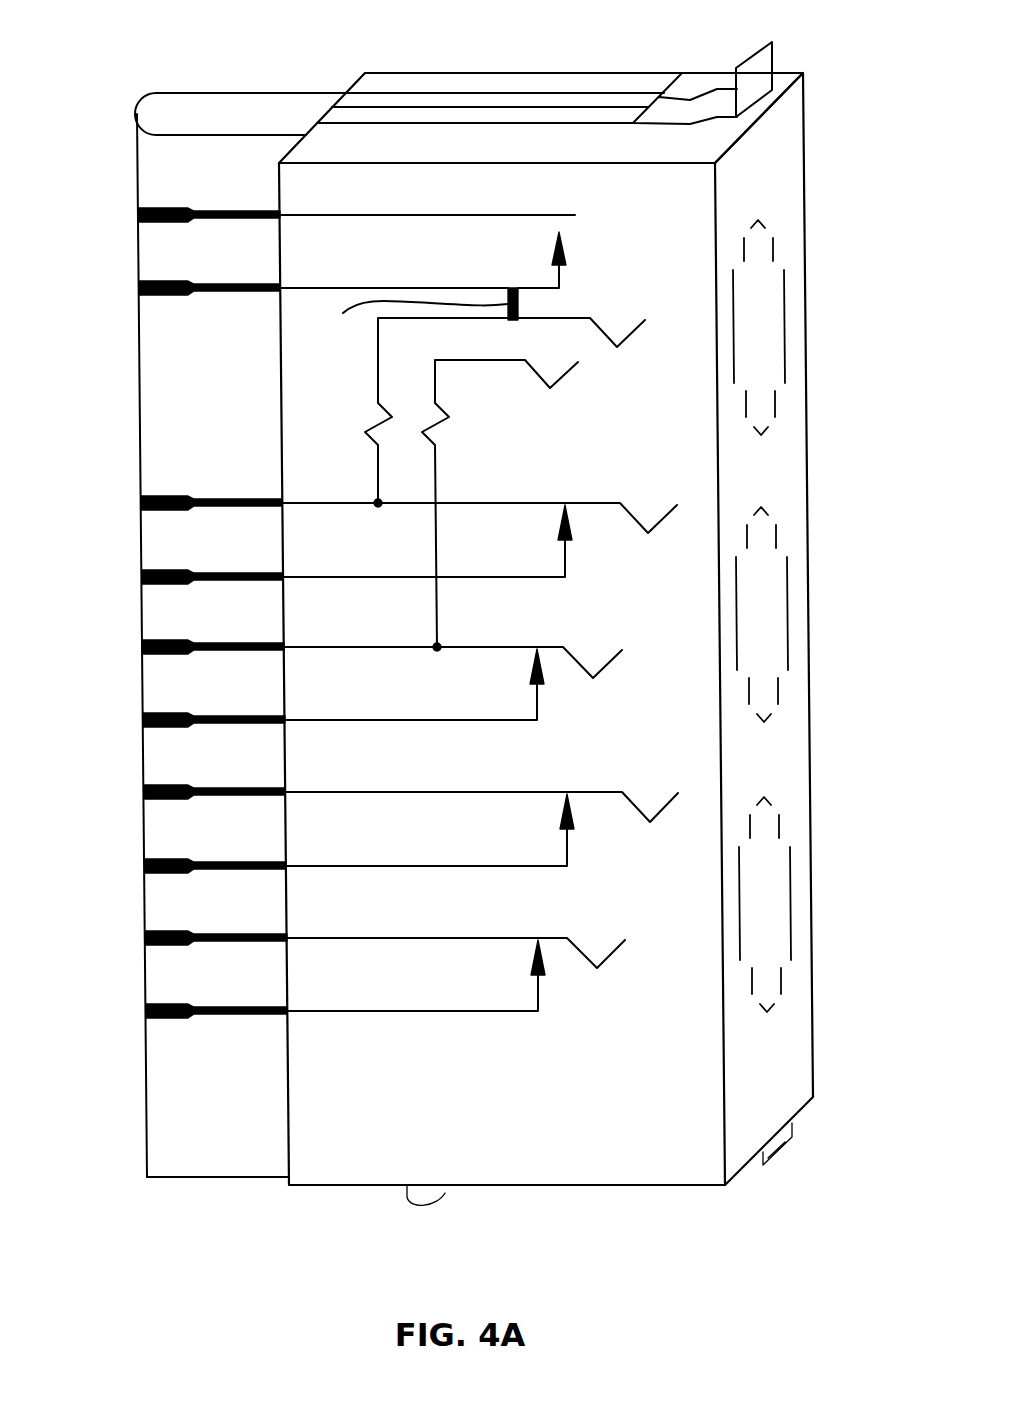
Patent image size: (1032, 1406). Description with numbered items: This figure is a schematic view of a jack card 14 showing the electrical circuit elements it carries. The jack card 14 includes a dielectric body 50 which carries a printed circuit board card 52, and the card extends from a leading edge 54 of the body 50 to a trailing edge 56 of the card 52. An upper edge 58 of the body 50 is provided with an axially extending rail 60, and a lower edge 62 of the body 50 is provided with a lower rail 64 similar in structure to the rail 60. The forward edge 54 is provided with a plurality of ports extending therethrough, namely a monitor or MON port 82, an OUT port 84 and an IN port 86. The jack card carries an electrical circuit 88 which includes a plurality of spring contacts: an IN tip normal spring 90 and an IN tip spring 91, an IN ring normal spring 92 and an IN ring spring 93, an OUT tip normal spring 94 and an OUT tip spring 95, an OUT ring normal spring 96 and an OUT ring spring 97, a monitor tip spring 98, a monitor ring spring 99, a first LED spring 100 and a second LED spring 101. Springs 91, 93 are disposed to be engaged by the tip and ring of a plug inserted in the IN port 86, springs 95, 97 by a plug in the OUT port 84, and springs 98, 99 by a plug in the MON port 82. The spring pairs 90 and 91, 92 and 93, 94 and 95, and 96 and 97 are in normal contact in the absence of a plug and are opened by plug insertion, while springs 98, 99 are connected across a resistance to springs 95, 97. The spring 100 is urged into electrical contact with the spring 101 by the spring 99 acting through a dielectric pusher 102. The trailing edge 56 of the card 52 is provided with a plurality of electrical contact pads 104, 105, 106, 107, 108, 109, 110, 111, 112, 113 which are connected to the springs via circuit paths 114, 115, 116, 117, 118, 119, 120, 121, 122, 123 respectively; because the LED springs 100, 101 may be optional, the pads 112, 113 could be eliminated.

The jack card 14 is at (545, 1195).
The dielectric body 50 is at (642, 1175).
The printed circuit board card 52 is at (237, 1160).
The leading edge 54 is at (783, 1070).
The trailing edge 56 is at (147, 1107).
The upper edge 58 is at (785, 80).
The rail 60 is at (518, 102).
The lower edge 62 is at (445, 1193).
The lower rail 64 is at (778, 1142).
The monitor port 82 is at (778, 295).
The OUT port 84 is at (778, 582).
The IN port 86 is at (778, 866).
The electrical circuit 88 is at (565, 1012).
The IN tip normal spring 90 is at (357, 1009).
The IN tip spring 91 is at (357, 936).
The IN ring normal spring 92 is at (357, 864).
The IN ring spring 93 is at (357, 790).
The OUT tip normal spring 94 is at (357, 718).
The OUT tip spring 95 is at (357, 645).
The OUT ring normal spring 96 is at (357, 575).
The OUT ring spring 97 is at (357, 501).
The monitor tip spring 98 is at (467, 362).
The monitor ring spring 99 is at (570, 317).
The first LED spring 100 is at (375, 285).
The second LED spring 101 is at (375, 212).
The dielectric pusher 102 is at (403, 321).
The electrical contact pad 104 is at (167, 1021).
The electrical contact pad 105 is at (167, 948).
The electrical contact pad 106 is at (167, 876).
The electrical contact pad 107 is at (167, 802).
The electrical contact pad 108 is at (167, 730).
The electrical contact pad 109 is at (167, 657).
The electrical contact pad 110 is at (167, 587).
The electrical contact pad 111 is at (167, 513).
The electrical contact pad 112 is at (167, 298).
The electrical contact pad 113 is at (167, 225).
The circuit path 114 is at (258, 1018).
The circuit path 115 is at (258, 945).
The circuit path 116 is at (258, 873).
The circuit path 117 is at (258, 799).
The circuit path 118 is at (258, 727).
The circuit path 119 is at (258, 654).
The circuit path 120 is at (258, 584).
The circuit path 121 is at (258, 510).
The circuit path 122 is at (258, 295).
The circuit path 123 is at (258, 222).